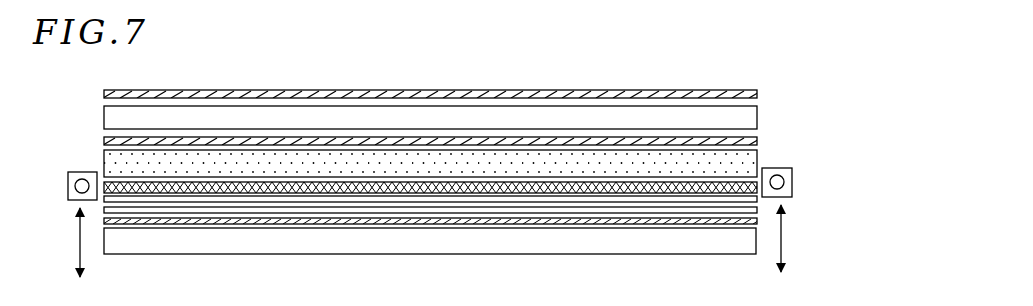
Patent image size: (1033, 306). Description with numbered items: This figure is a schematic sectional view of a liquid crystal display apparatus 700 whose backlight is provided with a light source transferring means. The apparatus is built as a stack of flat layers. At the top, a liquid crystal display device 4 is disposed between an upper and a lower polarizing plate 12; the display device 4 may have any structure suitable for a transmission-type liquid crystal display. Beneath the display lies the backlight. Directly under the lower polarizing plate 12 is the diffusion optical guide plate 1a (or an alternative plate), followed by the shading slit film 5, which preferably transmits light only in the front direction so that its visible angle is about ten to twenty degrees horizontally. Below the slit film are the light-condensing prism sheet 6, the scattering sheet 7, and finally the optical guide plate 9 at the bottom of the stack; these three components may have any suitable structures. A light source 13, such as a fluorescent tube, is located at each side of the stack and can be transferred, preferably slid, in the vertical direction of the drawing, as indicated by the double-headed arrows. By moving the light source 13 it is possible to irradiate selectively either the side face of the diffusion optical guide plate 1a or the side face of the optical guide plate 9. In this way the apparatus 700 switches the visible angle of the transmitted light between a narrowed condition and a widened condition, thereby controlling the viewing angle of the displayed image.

The liquid crystal display apparatus 700 is at (830, 74).
The polarizing plate 12 is at (167, 90).
The liquid crystal display device 4 is at (112, 120).
The diffusion optical guide plate 1a is at (752, 153).
The shading slit film 5 is at (757, 182).
The light-condensing prism sheet 6 is at (757, 200).
The scattering sheet 7 is at (745, 227).
The optical guide plate 9 is at (667, 243).
The light source 13 is at (82, 172).